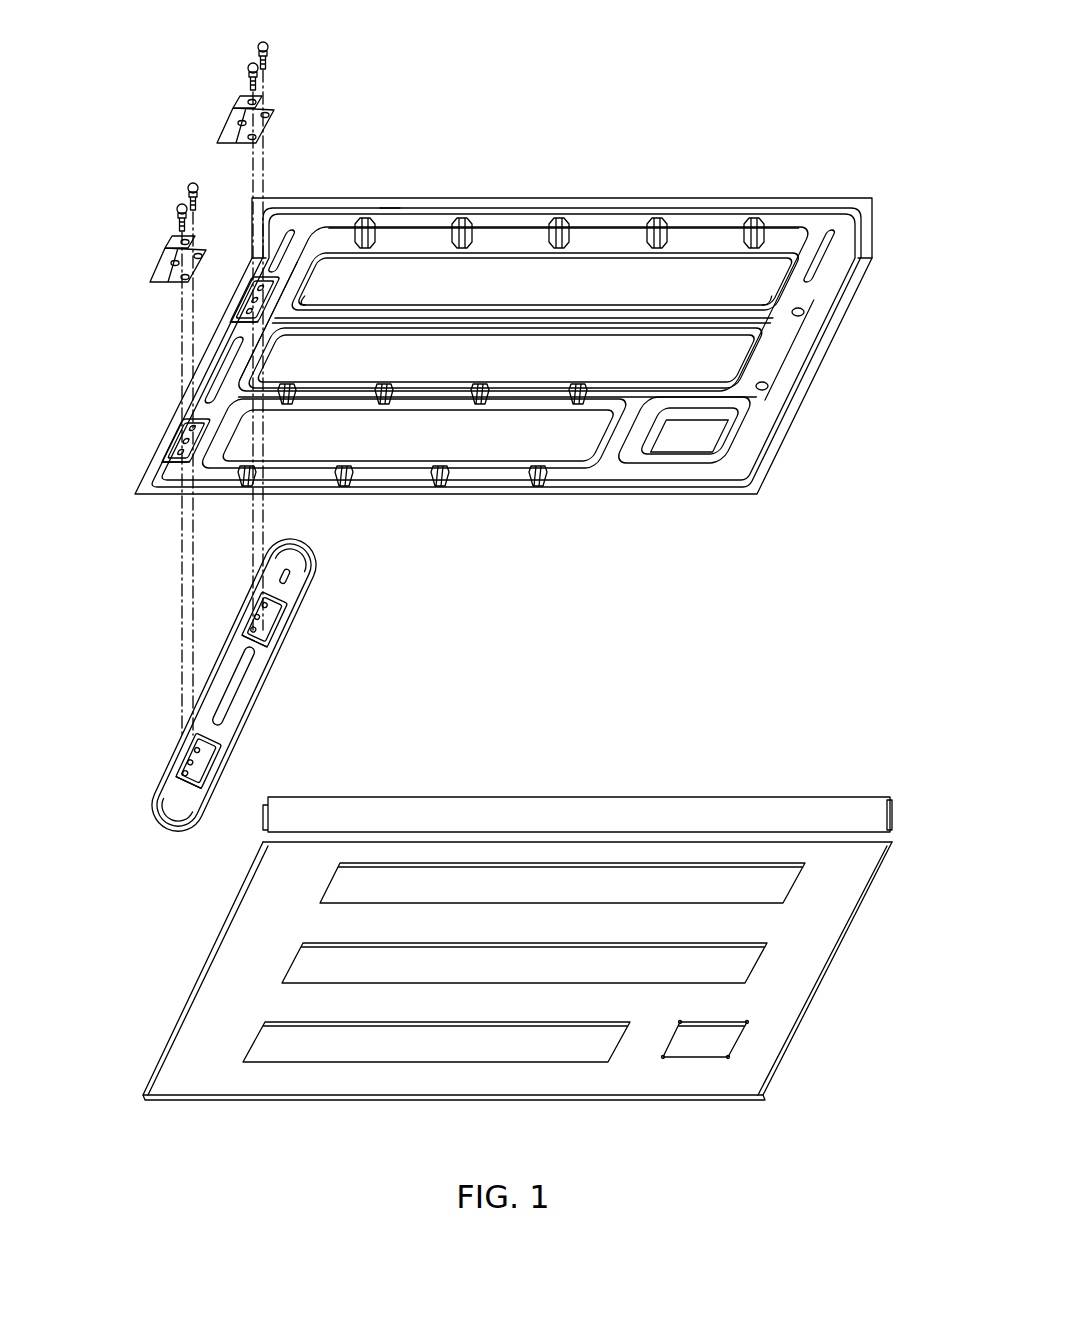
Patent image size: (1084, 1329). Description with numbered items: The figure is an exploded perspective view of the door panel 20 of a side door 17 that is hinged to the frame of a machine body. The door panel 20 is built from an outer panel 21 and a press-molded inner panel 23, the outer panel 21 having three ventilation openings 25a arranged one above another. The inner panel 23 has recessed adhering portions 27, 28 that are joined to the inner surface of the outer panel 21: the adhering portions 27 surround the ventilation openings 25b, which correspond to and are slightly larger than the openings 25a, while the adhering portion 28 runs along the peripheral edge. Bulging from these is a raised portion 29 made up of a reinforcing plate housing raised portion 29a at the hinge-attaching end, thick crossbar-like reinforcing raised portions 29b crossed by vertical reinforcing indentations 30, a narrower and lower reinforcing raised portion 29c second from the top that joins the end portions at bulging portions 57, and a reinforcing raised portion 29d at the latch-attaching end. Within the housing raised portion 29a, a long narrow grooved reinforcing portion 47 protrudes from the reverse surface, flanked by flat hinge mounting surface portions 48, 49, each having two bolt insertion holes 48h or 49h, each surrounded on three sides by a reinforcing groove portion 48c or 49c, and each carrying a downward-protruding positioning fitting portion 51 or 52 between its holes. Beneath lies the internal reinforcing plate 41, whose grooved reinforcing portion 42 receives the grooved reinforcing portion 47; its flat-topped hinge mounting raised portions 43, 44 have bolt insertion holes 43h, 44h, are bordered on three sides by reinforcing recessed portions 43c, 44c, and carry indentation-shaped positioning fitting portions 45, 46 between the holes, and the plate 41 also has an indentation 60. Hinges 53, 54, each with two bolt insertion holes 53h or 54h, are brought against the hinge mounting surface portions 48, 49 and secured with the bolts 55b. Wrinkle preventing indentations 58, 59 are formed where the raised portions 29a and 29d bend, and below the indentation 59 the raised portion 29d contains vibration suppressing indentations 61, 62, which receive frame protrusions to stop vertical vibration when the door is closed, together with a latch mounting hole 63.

The side door 17 is at (486, 138).
The door panel 20 is at (846, 194).
The outer panel 21 is at (517, 941).
The inner panel 23 is at (392, 210).
The ventilation openings 25a is at (590, 1064).
The ventilation openings 25b is at (512, 298).
The adhering portions 27 is at (442, 262).
The adhering portion 28 is at (455, 210).
The raised portion 29 is at (508, 290).
The reinforcing plate housing raised portion 29a is at (260, 368).
The reinforcing raised portions 29b is at (600, 230).
The reinforcing raised portion 29c is at (705, 310).
The reinforcing raised portion 29d is at (790, 350).
The reinforcing indentations 30 is at (684, 233).
The internal reinforcing plate 41 is at (236, 680).
The grooved reinforcing portion 42 is at (238, 688).
The hinge mounting raised portion 43 is at (245, 636).
The reinforcing recessed portion 43c is at (283, 612).
The bolt insertion holes 43h is at (265, 605).
The hinge mounting raised portion 44 is at (175, 781).
The reinforcing recessed portion 44c is at (213, 757).
The bolt insertion holes 44h is at (197, 750).
The positioning fitting portion 45 is at (260, 618).
The positioning fitting portion 46 is at (192, 763).
The grooved reinforcing portion 47 is at (222, 390).
The hinge mounting surface portion 48 is at (250, 312).
The reinforcing groove portion 48c is at (262, 322).
The bolt insertion holes 48h is at (259, 288).
The hinge mounting surface portion 49 is at (182, 458).
The reinforcing groove portion 49c is at (208, 466).
The bolt insertion holes 49h is at (192, 428).
The positioning fitting portion 51 is at (255, 300).
The positioning fitting portion 52 is at (188, 441).
The hinge 53 is at (266, 99).
The bolt insertion holes 53h is at (257, 137).
The hinge 54 is at (157, 247).
The bolt insertion holes 54h is at (181, 277).
The screws 55b is at (247, 68).
The bulging portions 57 is at (302, 300).
The wrinkle preventing indentation 58 is at (282, 232).
The wrinkle preventing indentation 59 is at (818, 240).
The indentation 60 is at (286, 572).
The vibration suppressing indentation 61 is at (806, 313).
The vibration suppressing indentation 62 is at (770, 387).
The latch mounting hole 63 is at (745, 432).